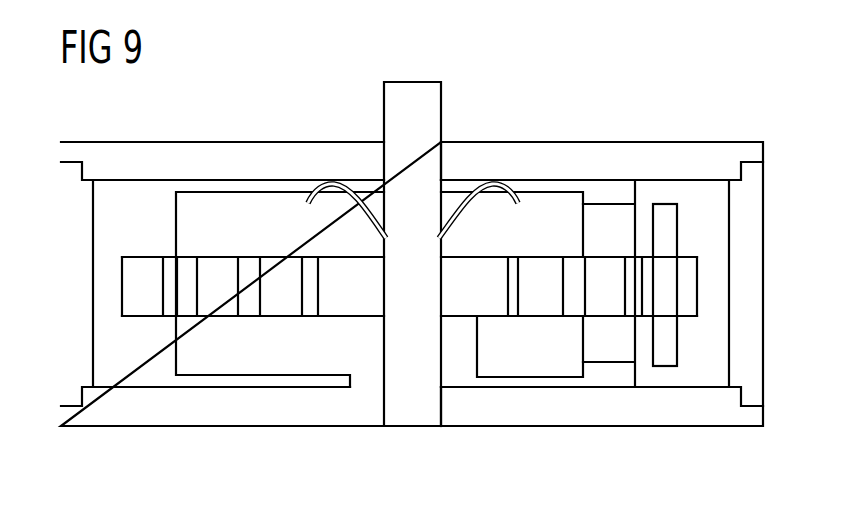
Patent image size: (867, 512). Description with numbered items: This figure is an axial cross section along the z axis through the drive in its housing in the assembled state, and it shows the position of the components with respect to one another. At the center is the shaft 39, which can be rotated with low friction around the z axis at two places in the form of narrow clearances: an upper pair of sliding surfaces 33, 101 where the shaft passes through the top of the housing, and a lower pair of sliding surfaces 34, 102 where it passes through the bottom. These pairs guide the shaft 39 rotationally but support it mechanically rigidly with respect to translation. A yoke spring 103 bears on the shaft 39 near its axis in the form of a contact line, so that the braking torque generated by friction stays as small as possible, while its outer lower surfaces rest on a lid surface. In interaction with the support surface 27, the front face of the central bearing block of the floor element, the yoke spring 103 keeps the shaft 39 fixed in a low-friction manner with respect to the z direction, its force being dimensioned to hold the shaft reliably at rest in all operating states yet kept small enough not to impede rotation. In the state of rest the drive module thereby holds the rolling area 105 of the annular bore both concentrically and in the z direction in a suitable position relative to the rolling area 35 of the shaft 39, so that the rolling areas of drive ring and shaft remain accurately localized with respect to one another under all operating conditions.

The front face 27 is at (370, 320).
The sliding surface 33 is at (436, 157).
The sliding surface 34 is at (438, 397).
The rolling area of the shaft 35 is at (506, 290).
The shaft 39 is at (452, 98).
The sliding surface 101 is at (446, 153).
The sliding surface 102 is at (449, 388).
The yoke spring 103 is at (353, 208).
The rolling area of the annular bore 105 is at (529, 283).